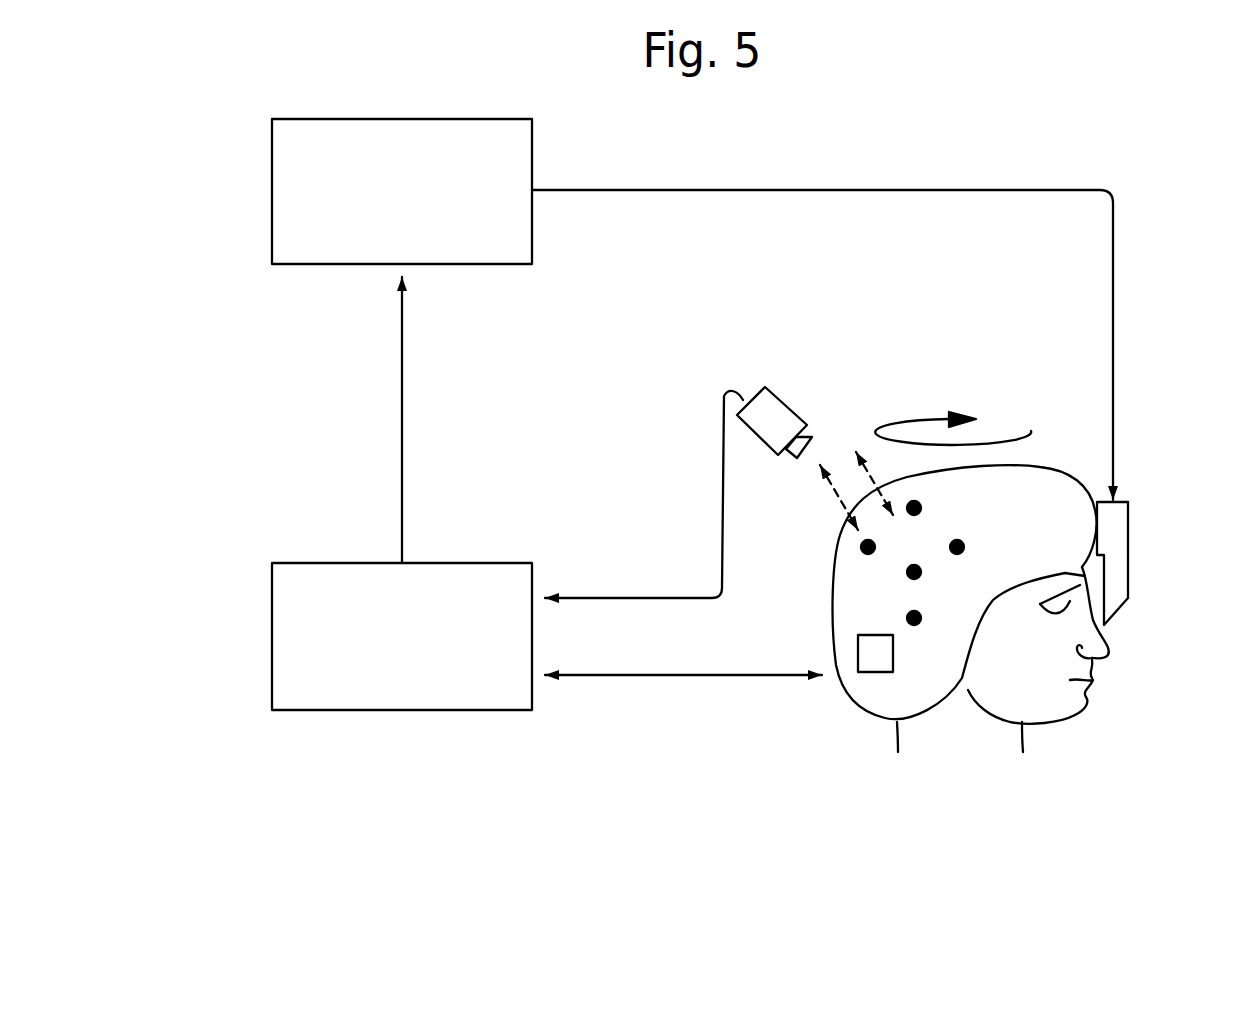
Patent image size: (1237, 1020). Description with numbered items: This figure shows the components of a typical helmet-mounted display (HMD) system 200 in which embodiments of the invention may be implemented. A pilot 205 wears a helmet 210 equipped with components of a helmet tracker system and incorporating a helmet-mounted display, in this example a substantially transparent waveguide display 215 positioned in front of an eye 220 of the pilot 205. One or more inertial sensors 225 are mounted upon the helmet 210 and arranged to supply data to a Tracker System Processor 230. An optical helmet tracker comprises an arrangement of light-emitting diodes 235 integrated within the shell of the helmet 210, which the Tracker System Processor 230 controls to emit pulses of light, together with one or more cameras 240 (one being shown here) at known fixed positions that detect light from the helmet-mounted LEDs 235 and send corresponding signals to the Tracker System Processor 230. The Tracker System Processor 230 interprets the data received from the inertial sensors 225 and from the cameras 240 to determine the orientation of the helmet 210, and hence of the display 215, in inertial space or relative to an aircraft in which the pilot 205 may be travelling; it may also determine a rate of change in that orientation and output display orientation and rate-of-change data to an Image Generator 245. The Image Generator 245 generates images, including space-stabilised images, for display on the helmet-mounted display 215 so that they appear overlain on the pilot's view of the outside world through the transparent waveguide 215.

The tracking system 200 is at (435, 842).
The pilot 205 is at (1063, 712).
The helmet 210 is at (868, 698).
The transparent waveguide display 215 is at (1120, 571).
The eye 220 is at (1057, 610).
The inertial sensors 225 is at (857, 645).
The Tracker System Processor 230 is at (295, 640).
The light-emitting diodes 235 is at (907, 572).
The cameras 240 is at (775, 407).
The Image Generator 245 is at (303, 179).